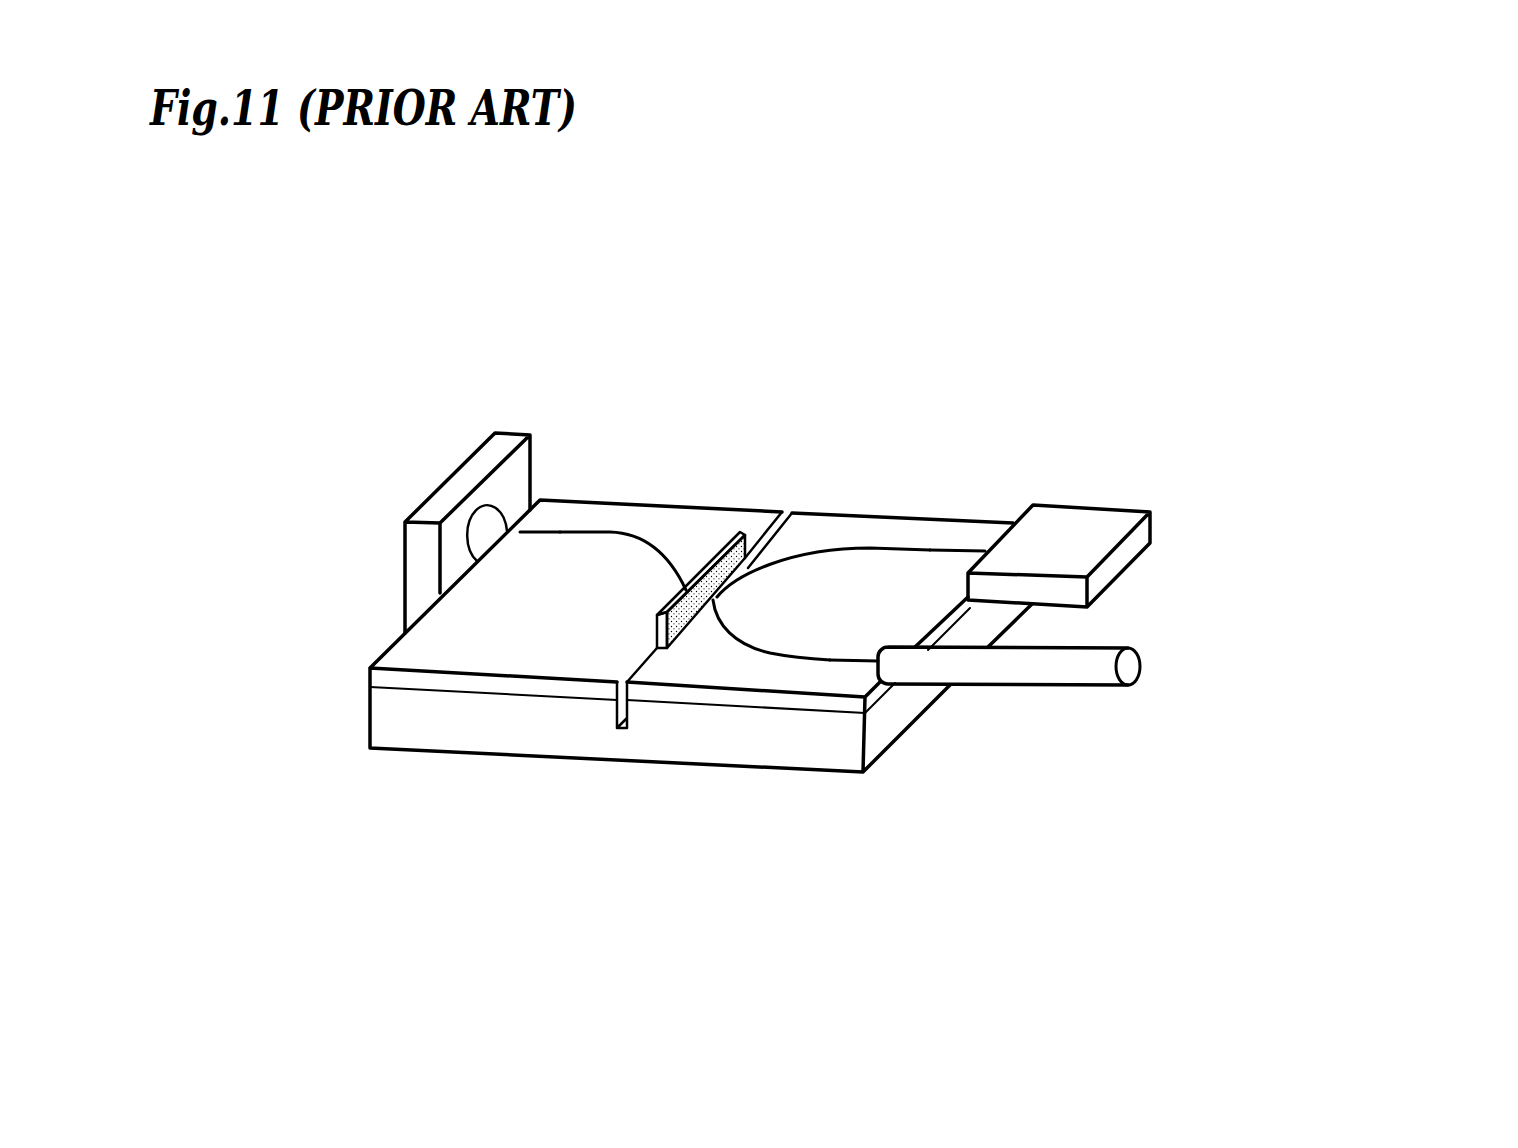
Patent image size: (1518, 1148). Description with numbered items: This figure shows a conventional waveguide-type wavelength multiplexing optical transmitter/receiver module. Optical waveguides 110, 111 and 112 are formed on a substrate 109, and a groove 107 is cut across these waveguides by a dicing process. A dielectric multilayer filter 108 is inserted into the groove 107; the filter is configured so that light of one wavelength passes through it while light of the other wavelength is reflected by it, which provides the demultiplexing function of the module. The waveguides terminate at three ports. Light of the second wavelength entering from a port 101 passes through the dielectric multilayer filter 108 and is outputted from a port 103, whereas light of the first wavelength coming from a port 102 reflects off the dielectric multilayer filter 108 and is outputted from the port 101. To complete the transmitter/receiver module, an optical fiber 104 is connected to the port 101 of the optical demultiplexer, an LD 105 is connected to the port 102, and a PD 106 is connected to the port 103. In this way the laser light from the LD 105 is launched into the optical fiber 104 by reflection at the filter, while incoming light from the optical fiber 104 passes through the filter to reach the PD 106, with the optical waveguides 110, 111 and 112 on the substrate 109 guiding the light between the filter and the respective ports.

The port 101 is at (838, 658).
The port 102 is at (960, 550).
The port 103 is at (555, 531).
The optical fiber 104 is at (1092, 672).
The LD 105 is at (1123, 553).
The PD 106 is at (457, 490).
The groove 107 is at (612, 722).
The dielectric multilayer filter 108 is at (682, 617).
The substrate 109 is at (413, 725).
The optical waveguide 110 is at (754, 650).
The optical waveguide 111 is at (813, 550).
The optical waveguide 112 is at (637, 532).